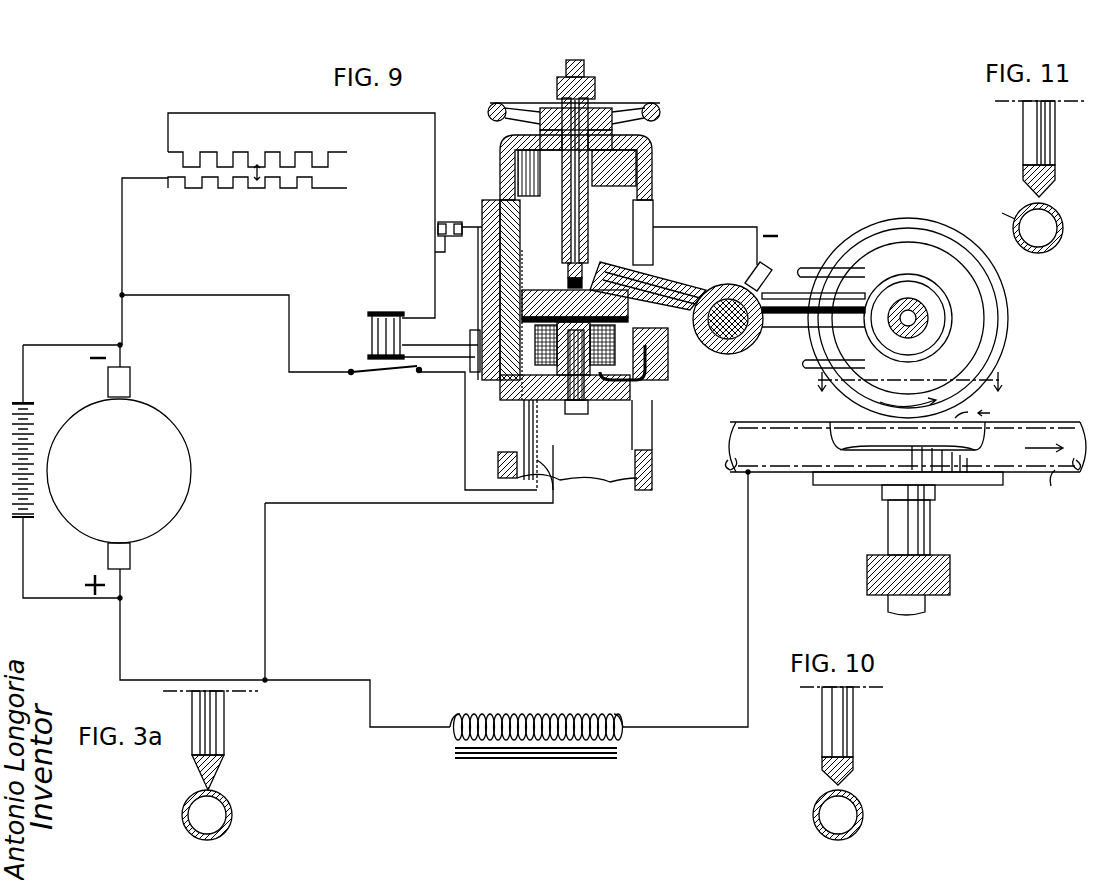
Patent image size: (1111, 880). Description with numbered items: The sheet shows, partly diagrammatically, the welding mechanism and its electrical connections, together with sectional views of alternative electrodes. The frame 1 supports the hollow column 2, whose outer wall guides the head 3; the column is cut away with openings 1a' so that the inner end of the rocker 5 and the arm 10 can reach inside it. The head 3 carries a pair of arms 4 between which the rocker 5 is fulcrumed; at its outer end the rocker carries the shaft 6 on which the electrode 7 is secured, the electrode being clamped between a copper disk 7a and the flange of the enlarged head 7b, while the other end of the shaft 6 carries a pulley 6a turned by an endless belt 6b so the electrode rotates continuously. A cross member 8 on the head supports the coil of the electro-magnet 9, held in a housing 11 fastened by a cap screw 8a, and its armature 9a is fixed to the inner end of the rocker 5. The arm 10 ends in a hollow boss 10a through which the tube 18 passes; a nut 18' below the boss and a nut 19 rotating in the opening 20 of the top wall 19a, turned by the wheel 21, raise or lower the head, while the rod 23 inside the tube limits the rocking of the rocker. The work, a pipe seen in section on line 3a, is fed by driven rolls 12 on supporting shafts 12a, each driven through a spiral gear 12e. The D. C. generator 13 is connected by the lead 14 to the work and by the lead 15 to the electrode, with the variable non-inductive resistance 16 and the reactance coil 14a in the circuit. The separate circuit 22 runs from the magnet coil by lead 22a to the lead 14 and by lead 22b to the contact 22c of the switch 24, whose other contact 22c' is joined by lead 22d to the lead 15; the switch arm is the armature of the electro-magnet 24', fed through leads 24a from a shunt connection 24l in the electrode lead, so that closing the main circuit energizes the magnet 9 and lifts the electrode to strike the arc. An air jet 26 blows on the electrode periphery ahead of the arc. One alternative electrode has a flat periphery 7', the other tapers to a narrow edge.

In FIG. 9, the frame 1 is at (652, 468).
In FIG. 9, the openings 1a' is at (627, 339).
In FIG. 9, the hollow column 2 is at (906, 416).
In FIG. 9, the head 3 is at (503, 380).
In FIG. 9, the section line 3a- 3a is at (678, 362).
In FIG. 9, the arms 4 is at (713, 352).
In FIG. 9, the rocker 5 is at (770, 340).
In FIG. 9, the shaft 6 is at (938, 313).
In FIG. 9, the pulley 6a is at (937, 348).
In FIG. 9, the endless belt 6b is at (868, 334).
In FIG. 9, the electrode 7 is at (921, 318).
In FIG. 3a, the electrode 7 is at (218, 808).
In FIG. 11, the electrode 7 is at (1023, 177).
In FIG. 10, the periphery 7' is at (851, 763).
In FIG. 3a, the copper disk 7a is at (224, 738).
In FIG. 3a, the enlarged head 7b is at (192, 748).
In FIG. 9, the cross member 8 is at (592, 399).
In FIG. 9, the cap screw 8a is at (580, 414).
In FIG. 9, the electro-magnet 9 is at (505, 386).
In FIG. 9, the armature 9a is at (665, 282).
In FIG. 9, the arm 10 is at (505, 246).
In FIG. 9, the hollow boss 10a is at (591, 256).
In FIG. 9, the housing 11 is at (661, 345).
In FIG. 9, the driven rolls 12 is at (848, 470).
In FIG. 9, the supporting shafts 12a is at (930, 532).
In FIG. 9, the spiral gear 12e is at (950, 586).
In FIG. 9, the D. C. generator 13 is at (160, 514).
In FIG. 9, the lead 14 is at (305, 682).
In FIG. 9, the reactance coil 14a is at (616, 738).
In FIG. 9, the lead 15 is at (391, 118).
In FIG. 9, the variable non-inductive resistance 16 is at (213, 152).
In FIG. 9, the tube 18 is at (588, 180).
In FIG. 9, the nut 18' is at (596, 270).
In FIG. 9, the nut 19 is at (613, 108).
In FIG. 9, the top wall 19a is at (515, 135).
In FIG. 9, the opening 20 is at (640, 142).
In FIG. 9, the wheel 21 is at (498, 103).
In FIG. 9, the circuit 22 is at (408, 563).
In FIG. 9, the lead 22a is at (537, 503).
In FIG. 9, the lead 22b is at (465, 412).
In FIG. 9, the contact 22c is at (435, 380).
In FIG. 9, the contact 22c' is at (341, 384).
In FIG. 9, the lead 22d is at (232, 296).
In FIG. 9, the rod 23 is at (535, 177).
In FIG. 9, the switch 24 is at (384, 383).
In FIG. 9, the electro-magnet 24' is at (368, 334).
In FIG. 9, the leads 24a is at (418, 346).
In FIG. 9, the terminal block 24l is at (452, 220).
In FIG. 9, the jet 26 is at (980, 407).